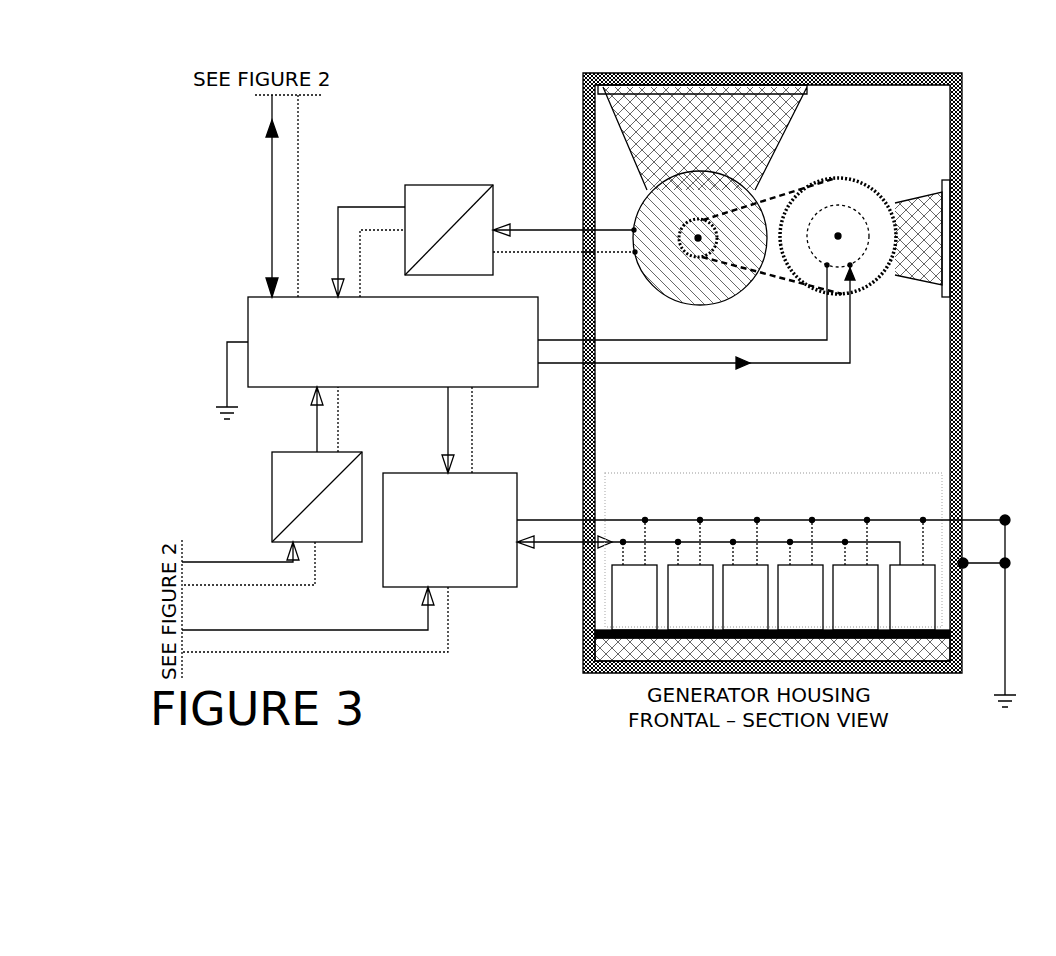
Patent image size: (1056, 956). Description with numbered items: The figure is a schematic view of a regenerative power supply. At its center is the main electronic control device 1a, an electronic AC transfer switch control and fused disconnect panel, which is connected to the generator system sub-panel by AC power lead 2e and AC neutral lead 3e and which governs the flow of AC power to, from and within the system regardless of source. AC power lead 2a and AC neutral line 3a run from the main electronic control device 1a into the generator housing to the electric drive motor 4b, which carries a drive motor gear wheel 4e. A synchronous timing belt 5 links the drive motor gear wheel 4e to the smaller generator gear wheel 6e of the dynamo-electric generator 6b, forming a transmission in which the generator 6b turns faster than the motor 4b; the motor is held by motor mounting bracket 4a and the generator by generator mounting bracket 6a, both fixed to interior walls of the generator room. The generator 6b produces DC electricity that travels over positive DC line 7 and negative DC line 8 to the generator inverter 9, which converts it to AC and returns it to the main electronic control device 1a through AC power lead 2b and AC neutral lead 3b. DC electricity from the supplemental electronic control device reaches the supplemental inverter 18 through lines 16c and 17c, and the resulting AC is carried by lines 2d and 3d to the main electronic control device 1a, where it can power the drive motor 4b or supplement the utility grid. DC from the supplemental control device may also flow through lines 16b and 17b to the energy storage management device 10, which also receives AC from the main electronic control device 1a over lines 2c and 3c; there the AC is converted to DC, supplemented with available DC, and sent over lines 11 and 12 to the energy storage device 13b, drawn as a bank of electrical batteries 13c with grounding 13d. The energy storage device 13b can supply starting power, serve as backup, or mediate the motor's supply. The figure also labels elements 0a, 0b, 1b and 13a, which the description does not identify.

The generator housing 0a is at (964, 372).
The housing ground connection 0b is at (983, 567).
The main electronic control device 1a is at (246, 318).
The panel ground connection 1b is at (222, 375).
The AC power lead 2a is at (650, 368).
The AC power lead 2b is at (370, 204).
The line 2c is at (445, 418).
The line 2d is at (313, 418).
The AC power lead 2e is at (268, 195).
The AC neutral line 3a is at (683, 343).
The AC neutral lead 3b is at (382, 228).
The line 3c is at (474, 418).
The line 3d is at (340, 418).
The AC neutral lead 3e is at (302, 195).
The motor mounting bracket 4a is at (905, 272).
The electric drive motor 4b is at (935, 240).
The drive motor gear wheel 4e is at (840, 176).
The synchronous timing belt 5 is at (787, 185).
The generator mounting bracket 6a is at (604, 135).
The dynamo-electric generator 6b is at (698, 308).
The generator gear wheel 6e is at (645, 292).
The positive DC line 7 is at (560, 228).
The negative DC line 8 is at (560, 258).
The generator inverter 9 is at (450, 183).
The energy storage management device 10 is at (505, 590).
The line 11 is at (570, 547).
The line 12 is at (571, 515).
The battery compartment floor 13a is at (585, 662).
The energy storage device 13b is at (772, 470).
The electrical batteries 13c is at (880, 598).
The grounding 13d is at (983, 514).
The line 16b is at (423, 608).
The line 16c is at (220, 558).
The line 17b is at (315, 657).
The line 17c is at (220, 590).
The supplemental inverter 18 is at (268, 500).